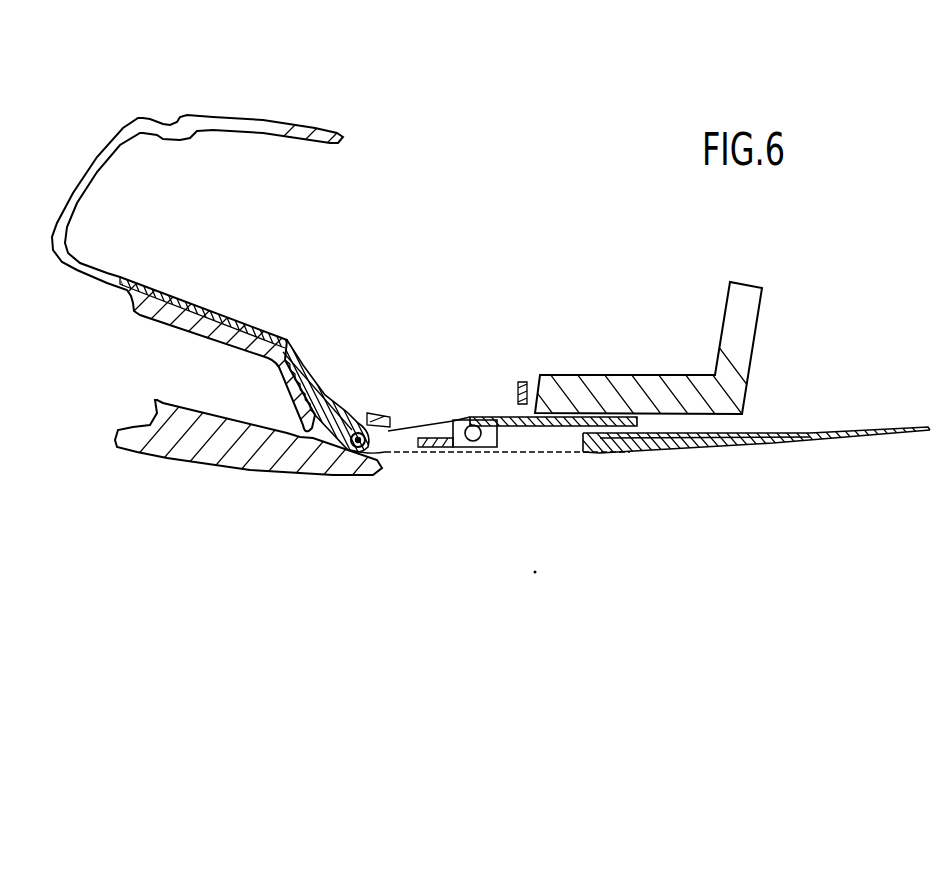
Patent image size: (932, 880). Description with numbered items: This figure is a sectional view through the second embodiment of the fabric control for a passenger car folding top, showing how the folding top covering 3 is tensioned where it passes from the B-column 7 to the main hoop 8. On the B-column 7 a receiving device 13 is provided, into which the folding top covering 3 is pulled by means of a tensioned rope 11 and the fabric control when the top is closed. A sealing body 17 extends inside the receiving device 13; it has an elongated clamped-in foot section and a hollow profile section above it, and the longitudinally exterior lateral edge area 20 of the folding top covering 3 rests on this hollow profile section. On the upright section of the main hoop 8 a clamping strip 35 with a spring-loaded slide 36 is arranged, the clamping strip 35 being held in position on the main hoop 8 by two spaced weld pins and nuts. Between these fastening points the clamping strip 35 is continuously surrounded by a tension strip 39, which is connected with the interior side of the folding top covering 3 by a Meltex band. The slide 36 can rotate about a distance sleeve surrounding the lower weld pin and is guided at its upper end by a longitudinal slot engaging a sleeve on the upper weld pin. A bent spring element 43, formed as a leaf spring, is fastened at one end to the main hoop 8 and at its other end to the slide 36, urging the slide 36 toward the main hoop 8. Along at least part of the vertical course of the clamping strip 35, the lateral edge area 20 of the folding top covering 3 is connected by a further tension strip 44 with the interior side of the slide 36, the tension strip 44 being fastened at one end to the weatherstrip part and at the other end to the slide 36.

The folding top covering 3 is at (893, 438).
The B-column 7 is at (249, 474).
The main hoop 8 is at (641, 374).
The tensioned rope 11 is at (356, 449).
The receiving device 13 is at (304, 416).
The sealing body 17 is at (345, 401).
The lateral edge area of the folding top covering 20 is at (389, 462).
The clamping strip 35 is at (685, 454).
The spring-loaded slide 36 is at (535, 428).
The tension strip 39 is at (753, 430).
The spring element 43 is at (520, 378).
The tension strip 44 is at (427, 420).